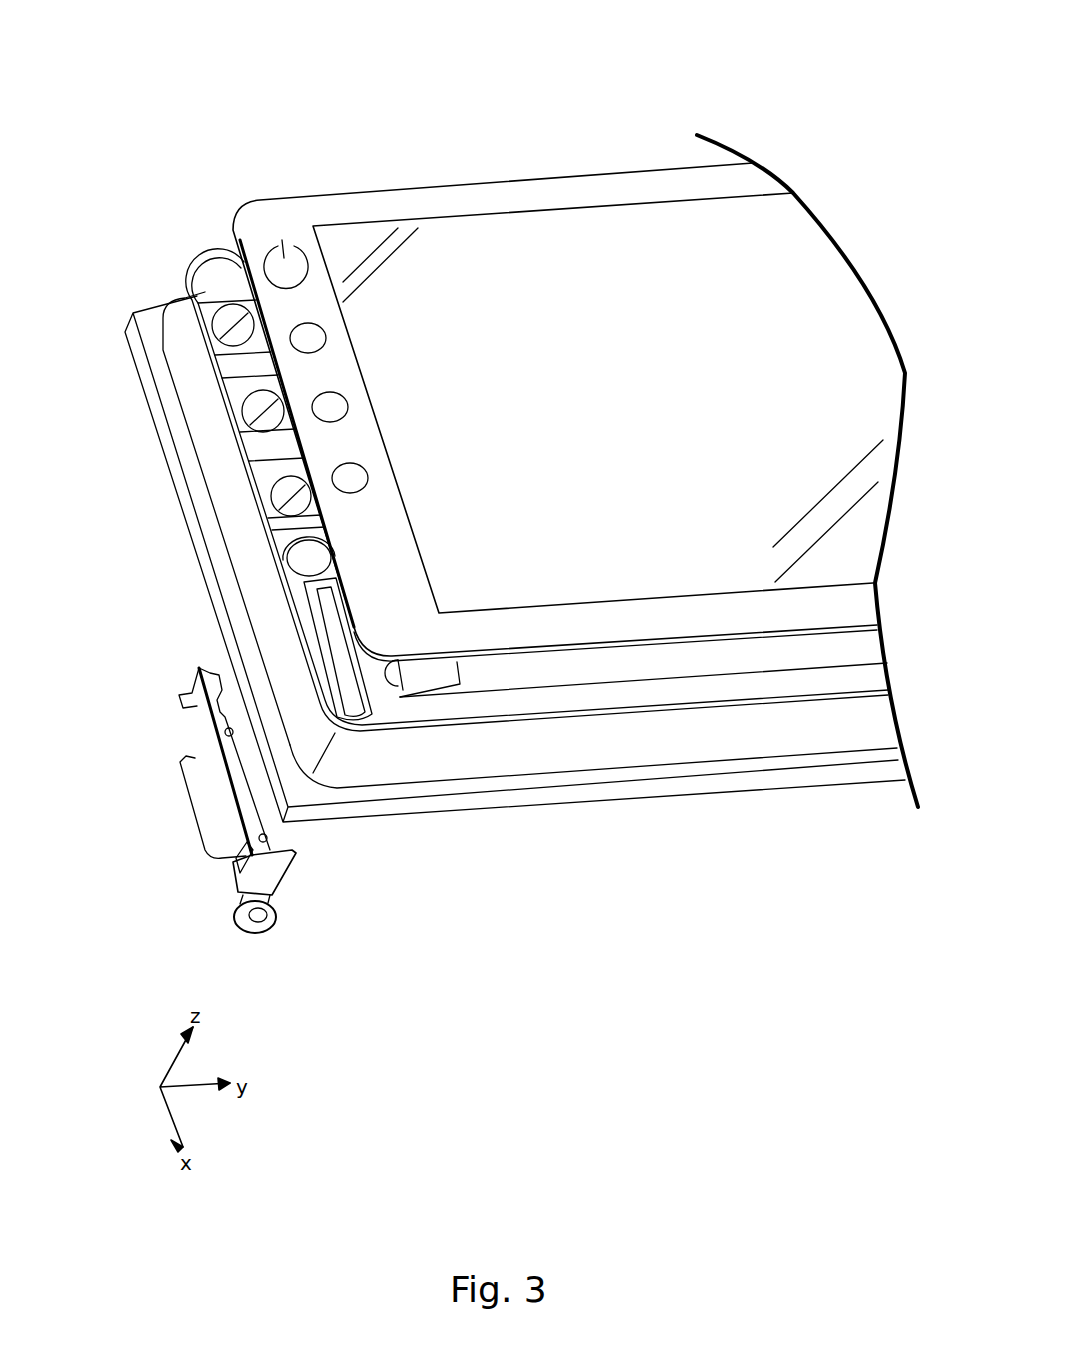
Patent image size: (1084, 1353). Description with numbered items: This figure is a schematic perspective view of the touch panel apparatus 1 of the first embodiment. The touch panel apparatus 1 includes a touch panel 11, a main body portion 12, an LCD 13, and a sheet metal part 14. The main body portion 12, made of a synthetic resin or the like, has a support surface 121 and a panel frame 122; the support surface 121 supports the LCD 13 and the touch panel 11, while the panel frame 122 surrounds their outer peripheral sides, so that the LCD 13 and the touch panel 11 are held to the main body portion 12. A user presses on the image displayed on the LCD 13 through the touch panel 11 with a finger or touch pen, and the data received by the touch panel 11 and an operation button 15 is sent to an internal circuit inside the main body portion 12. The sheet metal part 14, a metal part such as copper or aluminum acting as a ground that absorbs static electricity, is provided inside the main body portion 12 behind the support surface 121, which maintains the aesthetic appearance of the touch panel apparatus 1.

The touch panel apparatus 1 is at (497, 54).
The touch panel 11 is at (594, 230).
The main body portion 12 is at (187, 343).
The support surface 121 is at (613, 697).
The panel frame 122 is at (260, 517).
The LCD 13 is at (713, 659).
The sheet metal part 14 is at (213, 760).
The operation button 15 is at (228, 317).